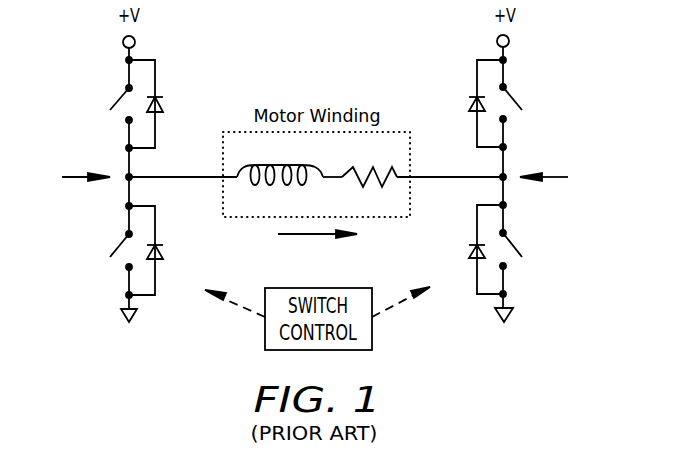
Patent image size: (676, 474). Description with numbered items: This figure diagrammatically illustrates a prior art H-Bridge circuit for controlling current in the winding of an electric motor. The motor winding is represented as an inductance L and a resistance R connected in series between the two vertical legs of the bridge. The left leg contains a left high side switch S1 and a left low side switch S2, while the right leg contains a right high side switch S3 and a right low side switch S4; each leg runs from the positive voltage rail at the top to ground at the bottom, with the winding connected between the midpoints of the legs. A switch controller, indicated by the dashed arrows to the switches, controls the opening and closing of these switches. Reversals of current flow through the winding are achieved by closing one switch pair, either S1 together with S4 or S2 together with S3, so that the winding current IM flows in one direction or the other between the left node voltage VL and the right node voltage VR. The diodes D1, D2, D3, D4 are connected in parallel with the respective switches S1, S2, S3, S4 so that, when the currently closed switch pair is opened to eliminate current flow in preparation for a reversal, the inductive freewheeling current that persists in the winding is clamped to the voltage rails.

The left high side switch S1 is at (107, 105).
The left low side switch S2 is at (107, 252).
The right high side switch S3 is at (527, 104).
The right low side switch S4 is at (527, 251).
The diode D1 is at (162, 104).
The diode D2 is at (162, 250).
The diode D3 is at (472, 103).
The diode D4 is at (472, 249).
The inductance L is at (280, 163).
The resistance R is at (369, 164).
The winding current IM is at (317, 248).
The left voltage VL is at (73, 179).
The right voltage VR is at (559, 178).